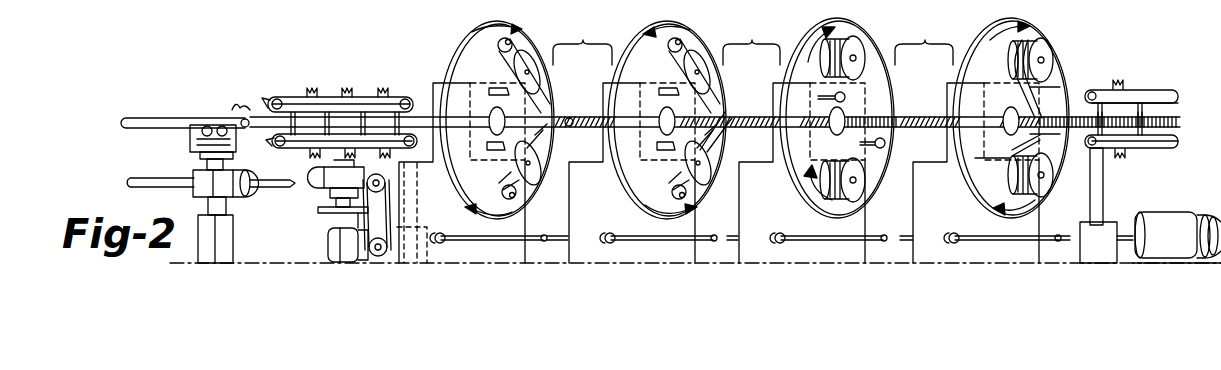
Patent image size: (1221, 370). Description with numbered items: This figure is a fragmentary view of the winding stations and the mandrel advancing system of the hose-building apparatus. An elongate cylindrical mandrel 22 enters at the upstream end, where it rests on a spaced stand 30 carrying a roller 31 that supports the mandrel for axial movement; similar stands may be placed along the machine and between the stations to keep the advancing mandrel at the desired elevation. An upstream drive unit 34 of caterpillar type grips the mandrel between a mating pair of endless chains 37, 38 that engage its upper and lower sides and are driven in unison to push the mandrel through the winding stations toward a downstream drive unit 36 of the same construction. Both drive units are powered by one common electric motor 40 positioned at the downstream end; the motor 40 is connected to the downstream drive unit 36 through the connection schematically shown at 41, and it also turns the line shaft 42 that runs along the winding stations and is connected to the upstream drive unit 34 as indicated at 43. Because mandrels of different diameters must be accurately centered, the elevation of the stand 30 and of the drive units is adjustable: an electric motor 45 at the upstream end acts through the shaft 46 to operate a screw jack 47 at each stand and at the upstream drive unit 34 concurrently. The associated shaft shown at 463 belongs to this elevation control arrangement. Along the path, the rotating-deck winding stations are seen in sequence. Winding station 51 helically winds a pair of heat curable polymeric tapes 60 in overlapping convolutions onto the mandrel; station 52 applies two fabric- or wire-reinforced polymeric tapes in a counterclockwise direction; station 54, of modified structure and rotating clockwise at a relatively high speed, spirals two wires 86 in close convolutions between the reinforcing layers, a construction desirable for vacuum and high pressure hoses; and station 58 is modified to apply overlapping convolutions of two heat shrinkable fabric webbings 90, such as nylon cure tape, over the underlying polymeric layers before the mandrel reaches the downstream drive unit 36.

The mandrel 22 is at (148, 118).
The roller 31 is at (224, 124).
The drive shaft 463 is at (168, 182).
The stand 30 is at (234, 256).
The upstream drive unit 34 is at (280, 90).
The endless chain 37 is at (332, 97).
The endless chain 38 is at (301, 152).
The shaft 46 is at (315, 186).
The screw jack 47 is at (336, 215).
The electric motor 45 is at (320, 243).
The winding station 51 is at (469, 32).
The heat curable polymeric tape 60 is at (545, 88).
The operative connection 43 is at (488, 226).
The winding station 52 is at (641, 32).
The line shaft 42 is at (555, 230).
The winding station 54 is at (857, 22).
The wire 86 is at (846, 97).
The winding station 58 is at (1024, 26).
The heat shrinkable fabric webbing 90 is at (1026, 58).
The downstream drive unit 36 is at (1166, 80).
The operative connection 41 is at (1104, 190).
The electric motor 40 is at (1185, 190).